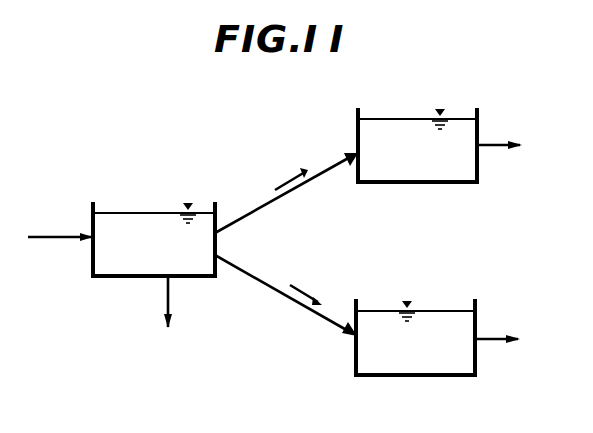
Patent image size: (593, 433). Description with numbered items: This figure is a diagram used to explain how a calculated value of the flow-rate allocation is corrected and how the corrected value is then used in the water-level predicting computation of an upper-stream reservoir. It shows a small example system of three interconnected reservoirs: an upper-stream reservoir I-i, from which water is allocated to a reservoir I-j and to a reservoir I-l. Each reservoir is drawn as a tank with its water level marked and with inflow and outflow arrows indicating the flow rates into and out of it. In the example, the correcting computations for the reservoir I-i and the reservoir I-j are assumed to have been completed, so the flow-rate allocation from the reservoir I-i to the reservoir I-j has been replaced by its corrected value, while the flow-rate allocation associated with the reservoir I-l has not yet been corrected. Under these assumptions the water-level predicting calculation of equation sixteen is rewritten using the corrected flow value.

The reservoir I-i is at (116, 276).
The reservoir I-j is at (395, 182).
The reservoir I-l is at (393, 375).